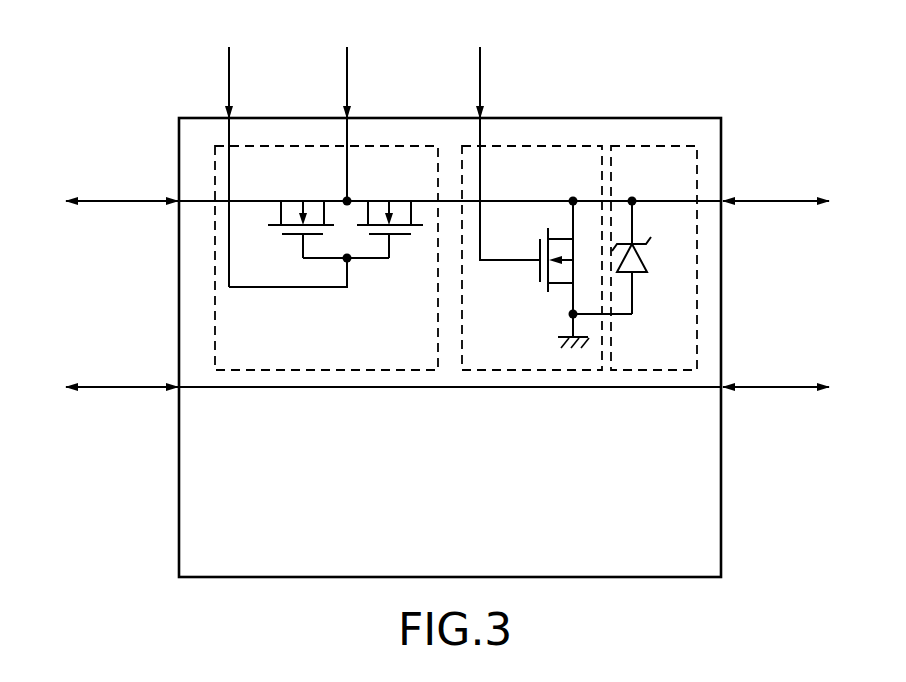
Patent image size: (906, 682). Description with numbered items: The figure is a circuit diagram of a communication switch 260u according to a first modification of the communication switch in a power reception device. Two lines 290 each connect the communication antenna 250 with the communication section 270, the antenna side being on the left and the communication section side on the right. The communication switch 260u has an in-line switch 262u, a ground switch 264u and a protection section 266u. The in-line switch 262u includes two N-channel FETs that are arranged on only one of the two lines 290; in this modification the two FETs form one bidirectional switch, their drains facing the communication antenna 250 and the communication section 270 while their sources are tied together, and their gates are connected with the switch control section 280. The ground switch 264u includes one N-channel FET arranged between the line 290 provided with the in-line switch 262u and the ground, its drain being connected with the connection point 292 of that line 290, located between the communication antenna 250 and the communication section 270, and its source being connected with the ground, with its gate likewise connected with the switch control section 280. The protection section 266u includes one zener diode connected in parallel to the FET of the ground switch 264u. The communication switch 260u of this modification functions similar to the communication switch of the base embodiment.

The communication antenna 250 is at (103, 280).
The communication section 270 is at (794, 280).
The switch control section 280 is at (369, 70).
The communication switch 260u is at (677, 118).
The lines 290 is at (703, 199).
The in-line switch 262u is at (398, 146).
The ground switch 264u is at (547, 146).
The connection point 292 is at (573, 200).
The protection section 266u is at (627, 146).